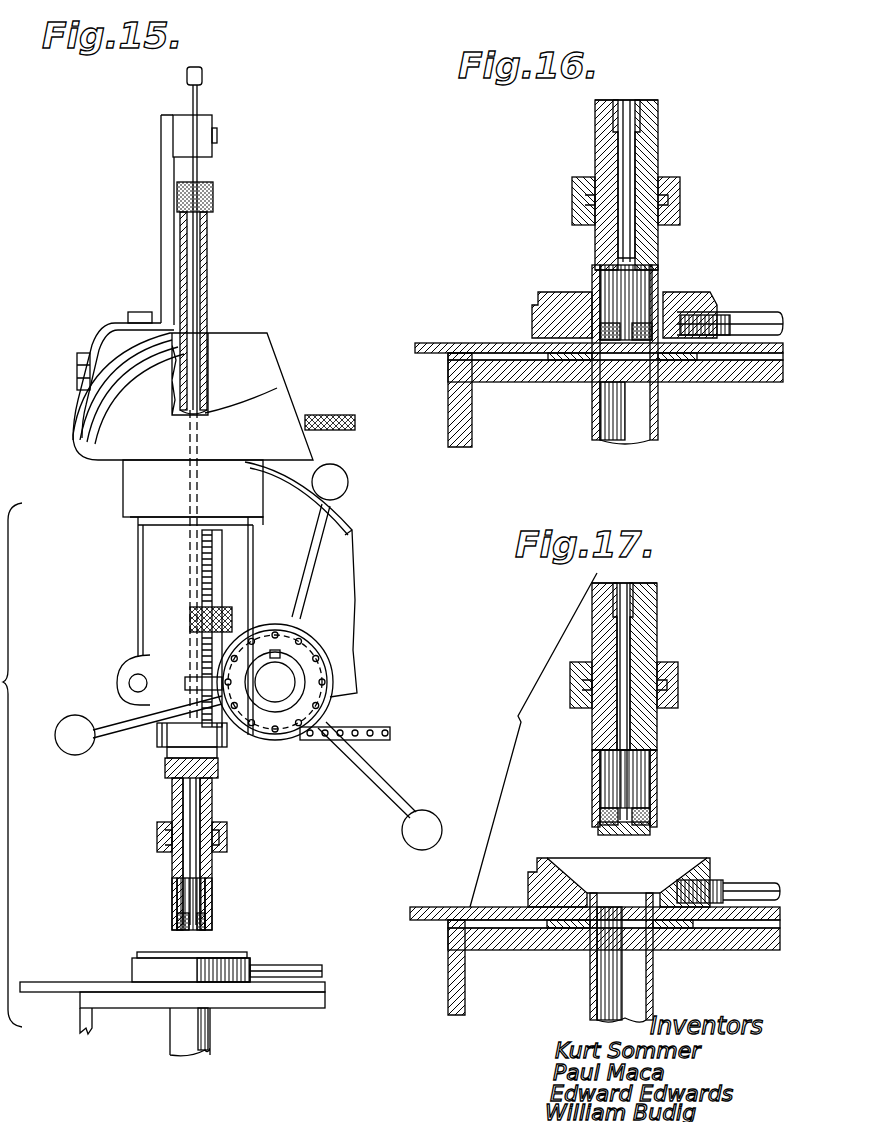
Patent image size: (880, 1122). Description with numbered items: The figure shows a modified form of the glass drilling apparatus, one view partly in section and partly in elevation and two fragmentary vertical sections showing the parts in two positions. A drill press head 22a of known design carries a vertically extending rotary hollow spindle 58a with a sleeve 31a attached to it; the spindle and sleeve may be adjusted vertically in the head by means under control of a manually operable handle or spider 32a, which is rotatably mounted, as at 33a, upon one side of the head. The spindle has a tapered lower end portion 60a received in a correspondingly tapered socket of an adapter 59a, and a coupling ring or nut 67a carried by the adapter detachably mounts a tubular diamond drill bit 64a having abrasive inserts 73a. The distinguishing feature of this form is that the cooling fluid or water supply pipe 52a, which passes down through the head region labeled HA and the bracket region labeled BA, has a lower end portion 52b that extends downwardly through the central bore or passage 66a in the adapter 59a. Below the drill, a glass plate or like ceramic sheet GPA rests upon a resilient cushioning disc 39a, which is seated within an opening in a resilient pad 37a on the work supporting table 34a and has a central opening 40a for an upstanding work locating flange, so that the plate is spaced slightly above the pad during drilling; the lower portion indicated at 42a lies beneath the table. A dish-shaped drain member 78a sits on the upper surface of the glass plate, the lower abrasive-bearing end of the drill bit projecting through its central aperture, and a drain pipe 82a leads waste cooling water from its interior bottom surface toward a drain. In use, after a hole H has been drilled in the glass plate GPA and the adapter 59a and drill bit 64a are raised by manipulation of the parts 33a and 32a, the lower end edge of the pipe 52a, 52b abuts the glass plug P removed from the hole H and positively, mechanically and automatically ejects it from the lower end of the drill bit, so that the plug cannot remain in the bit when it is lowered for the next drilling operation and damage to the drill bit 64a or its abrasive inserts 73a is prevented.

In FIG. 15, the cooling fluid or water supply pipe 52a is at (197, 173).
In FIG. 15, the bracket arm BA is at (161, 212).
In FIG. 15, the sleeve 31a is at (207, 287).
In FIG. 15, the head assembly HA is at (277, 400).
In FIG. 15, the drill press head 22a is at (132, 589).
In FIG. 15, the rotatable mounting of the handle 33a is at (324, 641).
In FIG. 15, the handle or spider 32a is at (372, 775).
In FIG. 15, the tapered lower end portion of the spindle 60a is at (214, 783).
In FIG. 15, the central bore or passage of the adapter 66a is at (176, 806).
In FIG. 16, the central bore or passage of the adapter 66a is at (615, 163).
In FIG. 17, the central bore or passage of the adapter 66a is at (612, 634).
In FIG. 15, the tubular drill bit 64a is at (214, 811).
In FIG. 16, the tubular drill bit 64a is at (684, 197).
In FIG. 17, the tubular drill bit 64a is at (662, 632).
In FIG. 15, the coupling ring or nut 67a is at (227, 835).
In FIG. 16, the coupling ring or nut 67a is at (680, 178).
In FIG. 17, the coupling ring or nut 67a is at (678, 672).
In FIG. 15, the lower end portion of the water supply pipe 52b is at (197, 897).
In FIG. 16, the lower end portion of the water supply pipe 52b is at (628, 152).
In FIG. 17, the lower end portion of the water supply pipe 52b is at (627, 773).
In FIG. 15, the abrasive inserts 73a is at (172, 920).
In FIG. 16, the abrasive inserts 73a is at (638, 323).
In FIG. 17, the abrasive inserts 73a is at (652, 812).
In FIG. 15, the dish-shaped drain member 78a is at (225, 964).
In FIG. 16, the dish-shaped drain member 78a is at (700, 310).
In FIG. 17, the dish-shaped drain member 78a is at (700, 860).
In FIG. 15, the drain pipe 82a is at (299, 966).
In FIG. 16, the drain pipe 82a is at (750, 312).
In FIG. 17, the drain pipe 82a is at (738, 883).
In FIG. 15, the glass plate or ceramic sheet GPA is at (37, 980).
In FIG. 16, the glass plate or ceramic sheet GPA is at (418, 343).
In FIG. 17, the glass plate or ceramic sheet GPA is at (432, 892).
In FIG. 15, the work supporting table 34a is at (283, 1003).
In FIG. 16, the work supporting table 34a is at (723, 382).
In FIG. 17, the work supporting table 34a is at (732, 950).
In FIG. 15, the spindle 42a is at (203, 1038).
In FIG. 16, the spindle 42a is at (630, 430).
In FIG. 17, the spindle 42a is at (635, 990).
In FIG. 16, the rotary hollow spindle 58a is at (630, 100).
In FIG. 17, the rotary hollow spindle 58a is at (630, 583).
In FIG. 16, the adapter 59a is at (656, 108).
In FIG. 17, the adapter 59a is at (657, 603).
In FIG. 16, the resilient pad 37a is at (448, 362).
In FIG. 17, the resilient pad 37a is at (448, 930).
In FIG. 16, the resilient cushioning disc 39a is at (570, 364).
In FIG. 17, the resilient cushioning disc 39a is at (556, 930).
In FIG. 17, the central opening of the cushioning disc 40a is at (592, 935).
In FIG. 17, the glass plug P is at (648, 838).
In FIG. 17, the hole H is at (587, 870).